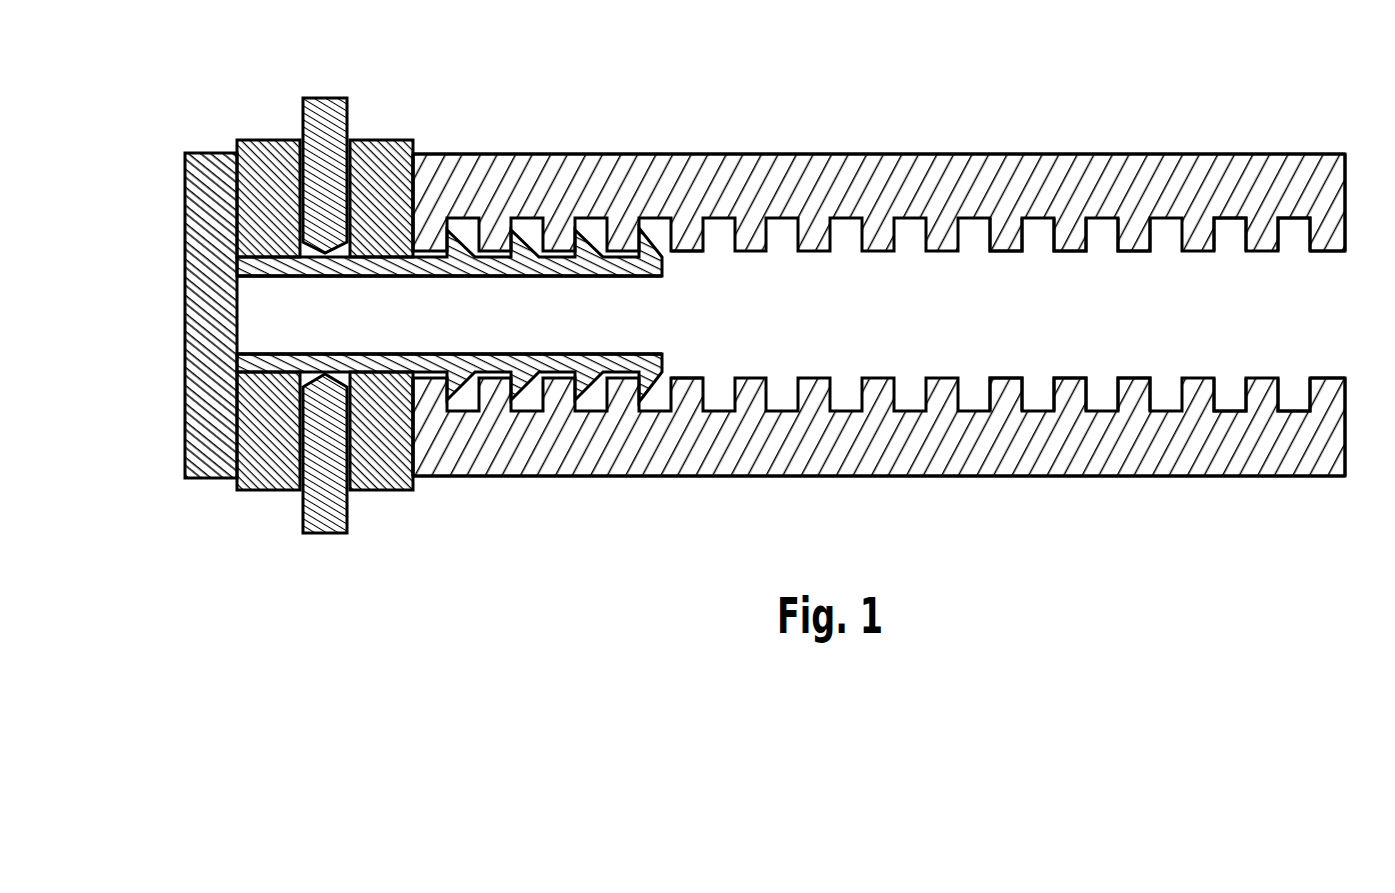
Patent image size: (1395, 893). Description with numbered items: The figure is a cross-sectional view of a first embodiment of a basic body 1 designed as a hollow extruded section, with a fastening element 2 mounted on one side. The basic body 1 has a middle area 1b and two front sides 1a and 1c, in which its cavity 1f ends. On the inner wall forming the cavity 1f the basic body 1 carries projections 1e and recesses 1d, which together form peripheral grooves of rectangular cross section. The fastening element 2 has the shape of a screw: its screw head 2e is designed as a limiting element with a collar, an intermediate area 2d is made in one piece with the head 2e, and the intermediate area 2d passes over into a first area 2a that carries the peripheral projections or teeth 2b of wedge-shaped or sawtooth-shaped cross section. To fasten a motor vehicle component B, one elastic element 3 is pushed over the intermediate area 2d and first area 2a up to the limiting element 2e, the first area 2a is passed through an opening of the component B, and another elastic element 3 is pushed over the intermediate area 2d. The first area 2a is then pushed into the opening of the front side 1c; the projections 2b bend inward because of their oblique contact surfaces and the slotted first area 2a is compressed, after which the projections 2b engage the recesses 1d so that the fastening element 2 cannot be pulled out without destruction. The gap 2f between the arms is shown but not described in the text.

The basic body 1 is at (790, 156).
The front side 1a is at (1348, 230).
The middle area 1b is at (860, 188).
The front side 1c is at (413, 190).
The recesses 1d is at (1293, 237).
The projections 1e is at (1135, 233).
The cavity 1f is at (1025, 326).
The fastening element 2 is at (185, 218).
The first area 2a is at (560, 265).
The projections 2b is at (580, 373).
The intermediate area 2d is at (313, 277).
The screw head 2e is at (208, 366).
The gap between arms 2f is at (478, 331).
The elastic element 3 is at (270, 148).
The motor vehicle component B is at (328, 135).